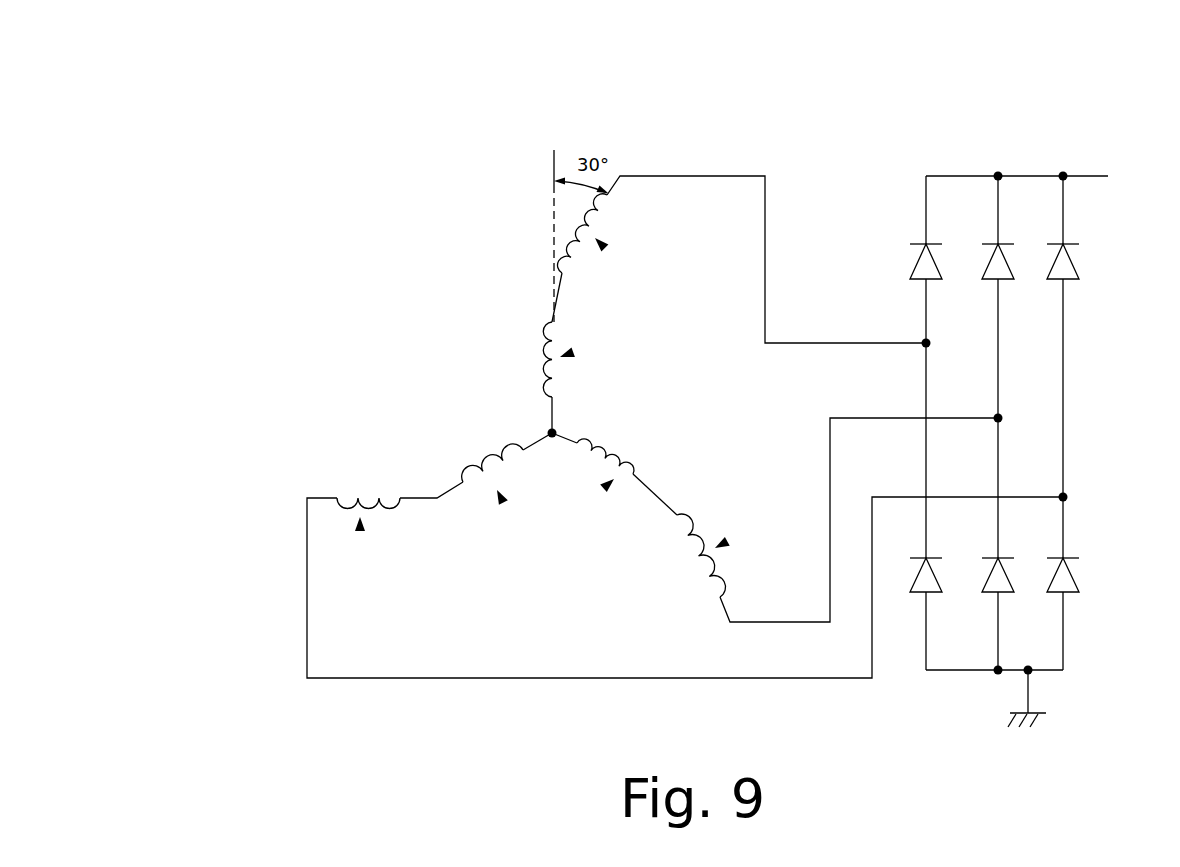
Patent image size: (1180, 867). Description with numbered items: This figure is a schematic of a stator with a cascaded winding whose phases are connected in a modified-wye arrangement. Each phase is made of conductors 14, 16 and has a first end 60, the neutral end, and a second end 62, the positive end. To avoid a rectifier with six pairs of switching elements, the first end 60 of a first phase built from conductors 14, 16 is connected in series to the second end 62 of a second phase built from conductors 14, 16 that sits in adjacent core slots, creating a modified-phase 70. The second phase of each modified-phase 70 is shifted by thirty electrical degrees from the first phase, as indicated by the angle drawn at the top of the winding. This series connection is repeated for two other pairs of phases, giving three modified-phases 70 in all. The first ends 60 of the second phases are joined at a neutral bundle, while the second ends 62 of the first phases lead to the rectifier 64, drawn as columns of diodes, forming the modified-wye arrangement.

The conductor 14 is at (503, 413).
The conductor 16 is at (583, 236).
The first end 60 is at (558, 280).
The second end 62 is at (552, 315).
The modified-phase 70 is at (601, 244).
The rectifier 64 is at (1048, 166).